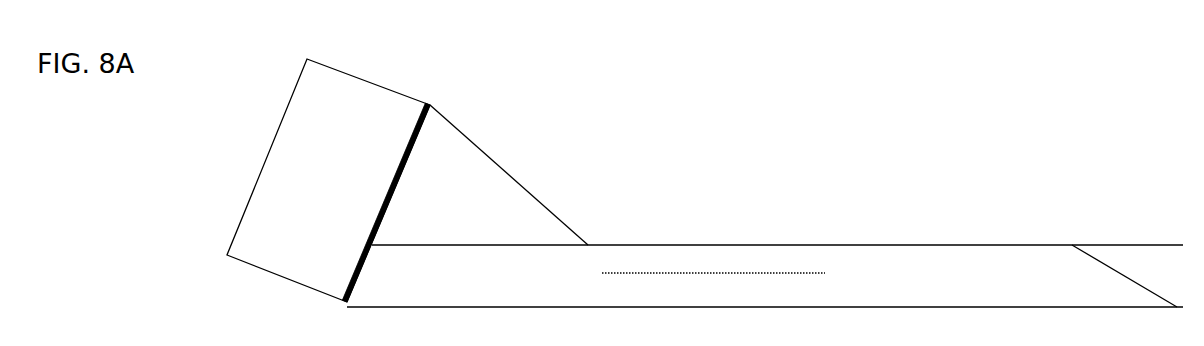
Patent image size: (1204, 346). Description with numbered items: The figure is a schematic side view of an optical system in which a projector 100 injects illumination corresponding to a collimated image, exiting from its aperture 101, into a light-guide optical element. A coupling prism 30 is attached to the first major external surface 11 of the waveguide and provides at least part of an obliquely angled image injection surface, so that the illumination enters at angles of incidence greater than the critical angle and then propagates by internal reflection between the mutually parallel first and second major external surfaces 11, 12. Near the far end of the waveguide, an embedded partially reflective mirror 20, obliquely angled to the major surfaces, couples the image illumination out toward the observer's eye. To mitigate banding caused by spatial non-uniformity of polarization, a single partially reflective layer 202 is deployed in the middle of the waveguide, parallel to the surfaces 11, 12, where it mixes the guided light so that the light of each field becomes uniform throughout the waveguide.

The projector 100 is at (262, 170).
The aperture 101 is at (349, 285).
The coupling prism 30 is at (490, 158).
The first major external surface 11 is at (940, 245).
The second major external surface 12 is at (938, 307).
The partially reflective mirror 20 is at (1086, 253).
The partially reflective layer 202 is at (740, 273).